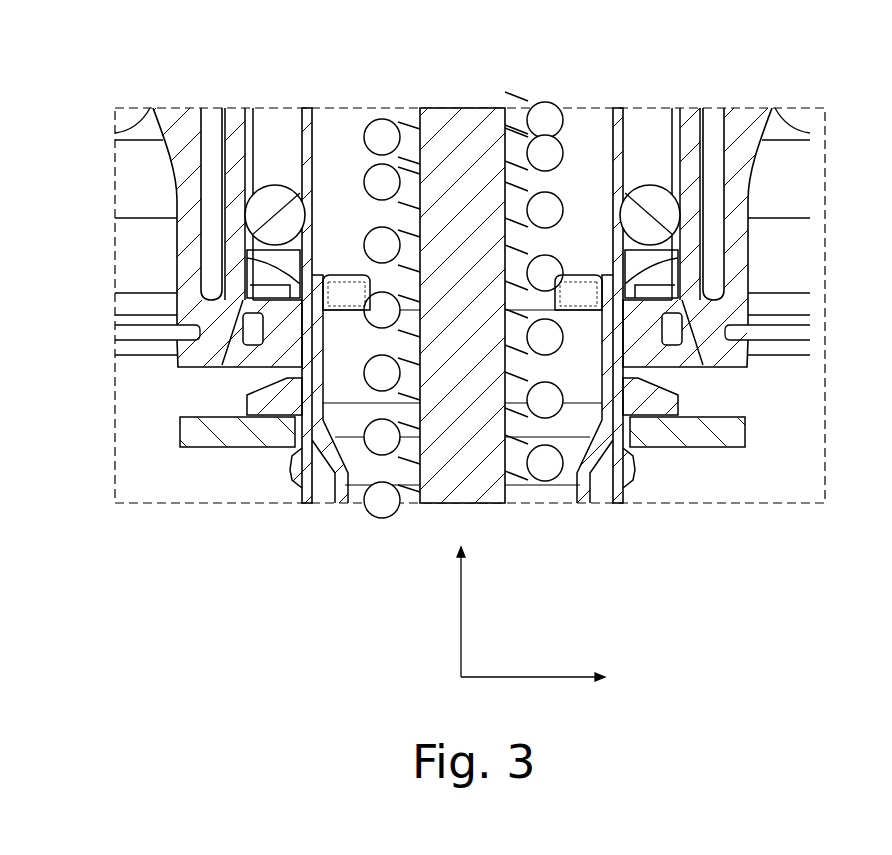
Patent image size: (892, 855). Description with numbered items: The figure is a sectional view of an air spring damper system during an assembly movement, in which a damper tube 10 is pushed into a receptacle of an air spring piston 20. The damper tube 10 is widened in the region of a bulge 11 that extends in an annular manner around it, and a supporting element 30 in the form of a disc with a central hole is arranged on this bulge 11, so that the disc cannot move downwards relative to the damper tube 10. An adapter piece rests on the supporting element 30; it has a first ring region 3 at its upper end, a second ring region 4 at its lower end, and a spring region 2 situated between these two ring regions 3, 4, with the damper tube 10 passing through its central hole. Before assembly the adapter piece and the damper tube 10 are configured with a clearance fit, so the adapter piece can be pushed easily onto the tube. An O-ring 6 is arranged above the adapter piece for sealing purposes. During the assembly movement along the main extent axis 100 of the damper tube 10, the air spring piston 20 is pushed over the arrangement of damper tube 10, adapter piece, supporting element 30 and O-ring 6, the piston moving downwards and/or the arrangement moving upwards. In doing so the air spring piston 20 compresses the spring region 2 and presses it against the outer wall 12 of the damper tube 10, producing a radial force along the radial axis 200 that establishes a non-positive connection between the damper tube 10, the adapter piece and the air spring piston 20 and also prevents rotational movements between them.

The spring region 2 is at (178, 367).
The air spring piston 20 is at (224, 157).
The damper tube 10 is at (304, 116).
The O-ring 6 is at (267, 203).
The first ring region 3 is at (248, 252).
The outer wall 12 is at (243, 315).
The second ring region 4 is at (247, 397).
The supporting element 30 is at (183, 430).
The bulge 11 is at (291, 458).
The main extent axis 100 is at (462, 599).
The radial axis 200 is at (557, 680).